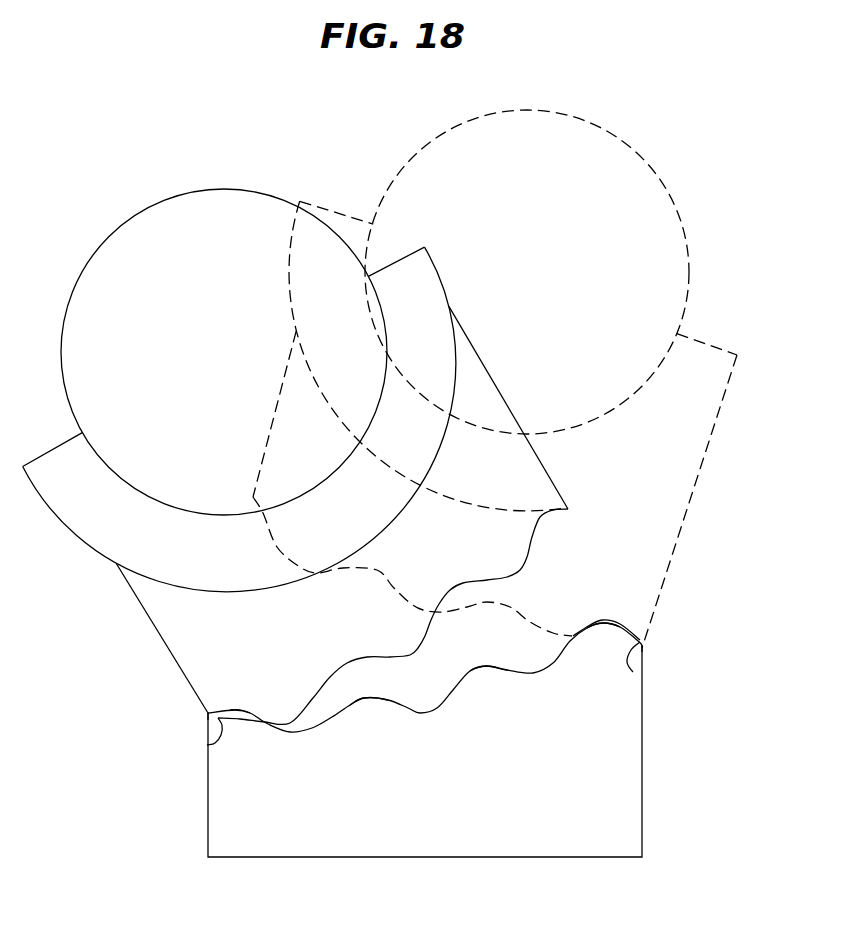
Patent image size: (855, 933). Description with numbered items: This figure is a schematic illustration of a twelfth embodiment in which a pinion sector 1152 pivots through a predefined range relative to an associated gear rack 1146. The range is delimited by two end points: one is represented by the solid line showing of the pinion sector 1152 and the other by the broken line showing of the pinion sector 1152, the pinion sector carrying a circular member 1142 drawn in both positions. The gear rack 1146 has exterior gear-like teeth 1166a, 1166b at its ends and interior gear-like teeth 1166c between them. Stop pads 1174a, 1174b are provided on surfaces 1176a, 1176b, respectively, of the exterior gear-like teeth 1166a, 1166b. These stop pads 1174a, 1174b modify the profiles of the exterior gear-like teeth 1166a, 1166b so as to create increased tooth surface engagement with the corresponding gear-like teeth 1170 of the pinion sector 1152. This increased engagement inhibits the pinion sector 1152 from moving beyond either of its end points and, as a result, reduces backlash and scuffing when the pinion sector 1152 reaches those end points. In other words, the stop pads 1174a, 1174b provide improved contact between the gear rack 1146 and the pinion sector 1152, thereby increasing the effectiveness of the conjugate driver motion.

The roller 1142 is at (110, 230).
The pinion sector 1152 is at (147, 597).
The gear rack 1146 is at (427, 823).
The gear-like teeth 1170 is at (511, 570).
The exterior gear-like tooth 1166a is at (248, 722).
The exterior gear-like tooth 1166b is at (603, 629).
The interior gear-like teeth 1166c is at (362, 704).
The stop pad 1174a is at (207, 715).
The stop pad 1174b is at (642, 646).
The surface 1176a is at (207, 745).
The surface 1176b is at (633, 672).